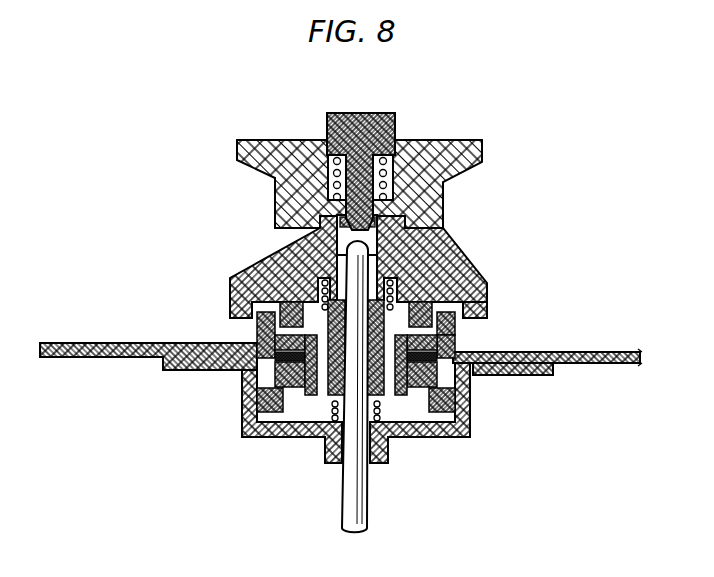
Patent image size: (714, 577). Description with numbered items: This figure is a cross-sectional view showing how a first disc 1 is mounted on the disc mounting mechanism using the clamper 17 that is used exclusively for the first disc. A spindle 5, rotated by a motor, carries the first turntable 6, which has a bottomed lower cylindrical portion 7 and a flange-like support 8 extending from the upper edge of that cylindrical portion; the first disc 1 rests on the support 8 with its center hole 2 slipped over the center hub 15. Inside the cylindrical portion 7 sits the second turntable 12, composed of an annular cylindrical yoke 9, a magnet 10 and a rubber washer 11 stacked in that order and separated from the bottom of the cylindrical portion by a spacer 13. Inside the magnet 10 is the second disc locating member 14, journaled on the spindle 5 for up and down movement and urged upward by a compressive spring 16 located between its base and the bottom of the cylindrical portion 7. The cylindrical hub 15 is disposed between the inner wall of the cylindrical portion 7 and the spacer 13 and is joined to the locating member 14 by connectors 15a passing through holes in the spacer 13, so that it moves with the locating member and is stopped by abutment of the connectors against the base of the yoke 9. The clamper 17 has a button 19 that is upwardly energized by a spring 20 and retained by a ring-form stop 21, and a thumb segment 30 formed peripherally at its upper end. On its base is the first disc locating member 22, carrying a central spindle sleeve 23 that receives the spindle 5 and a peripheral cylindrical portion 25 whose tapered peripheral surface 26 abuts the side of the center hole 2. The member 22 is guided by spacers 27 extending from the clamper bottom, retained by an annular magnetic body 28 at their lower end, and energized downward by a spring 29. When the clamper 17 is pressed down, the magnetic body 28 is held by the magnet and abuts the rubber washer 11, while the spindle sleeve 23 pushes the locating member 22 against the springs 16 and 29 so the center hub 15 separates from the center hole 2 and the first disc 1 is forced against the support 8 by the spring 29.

The first disc 1 is at (592, 352).
The center hole 2 is at (474, 378).
The spindle 5 is at (343, 497).
The first turntable 6 is at (462, 440).
The bottomed lower cylindrical portion 7 is at (471, 427).
The support 8 is at (537, 376).
The cylindrical yoke 9 is at (434, 427).
The magnet 10 is at (412, 438).
The rubber washer 11 is at (488, 303).
The second turntable 12 is at (263, 390).
The spacer 13 is at (283, 418).
The second disc locating member 14 is at (455, 280).
The cylindrical hub 15 is at (247, 380).
The connectors 15a is at (252, 433).
The compressive spring 16 is at (310, 418).
The clamper 17 is at (466, 140).
The button 19 is at (369, 113).
The spring 20 is at (388, 170).
The stop 21 is at (395, 220).
The first disc locating member 22 is at (255, 329).
The spindle sleeve 23 is at (312, 300).
The cylindrical portion 25 is at (462, 330).
The peripheral surface 26 is at (462, 342).
The spacers 27 is at (283, 300).
The annular magnetic body 28 is at (418, 298).
The spring 29 is at (323, 292).
The thumb segment 30 is at (484, 156).